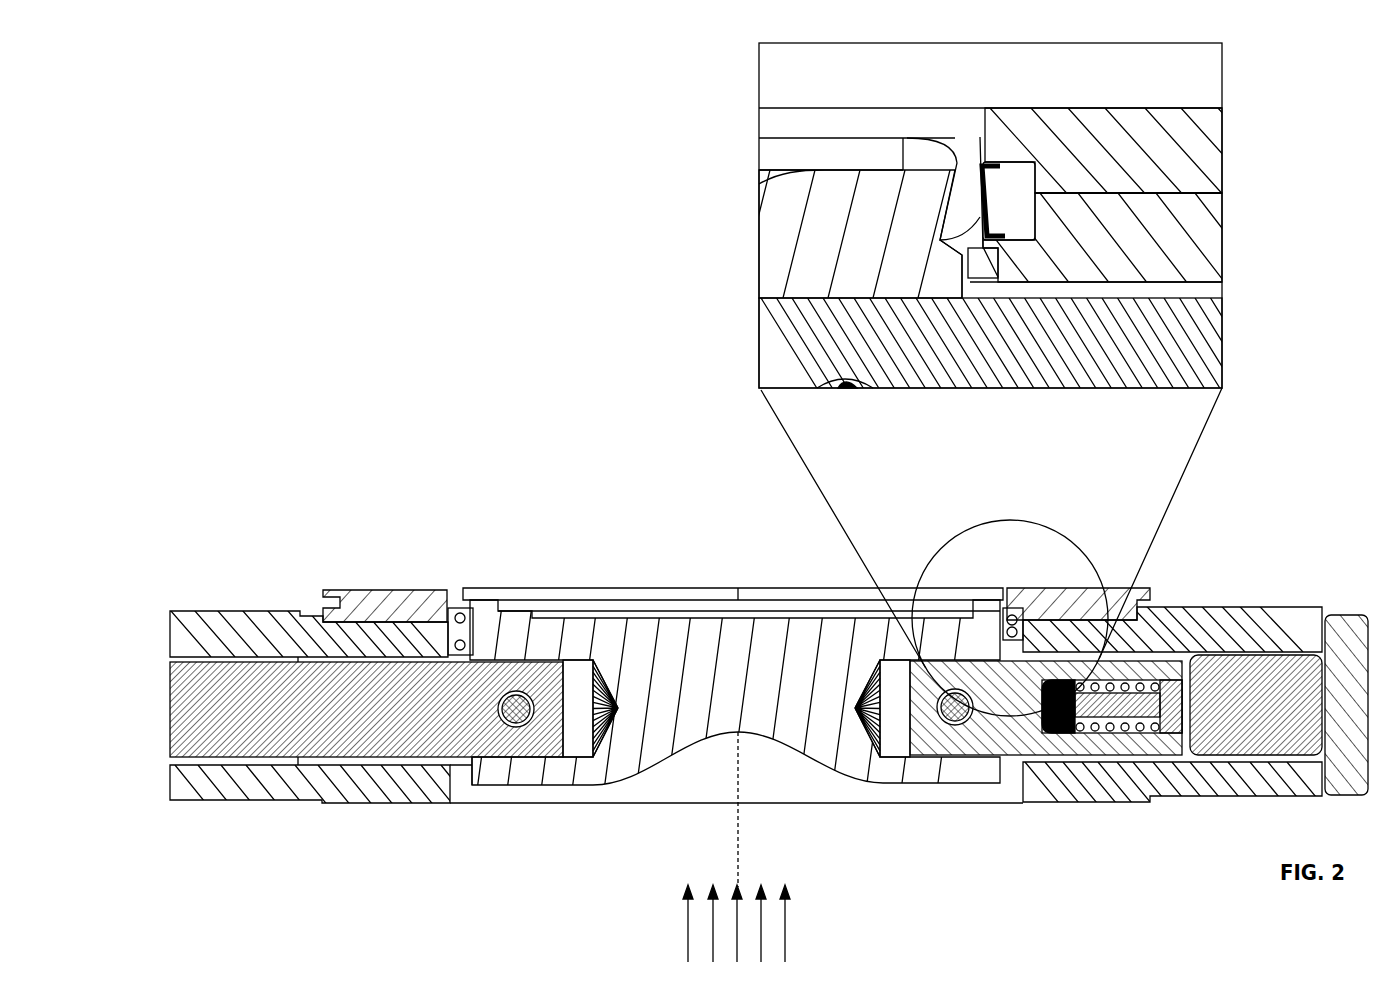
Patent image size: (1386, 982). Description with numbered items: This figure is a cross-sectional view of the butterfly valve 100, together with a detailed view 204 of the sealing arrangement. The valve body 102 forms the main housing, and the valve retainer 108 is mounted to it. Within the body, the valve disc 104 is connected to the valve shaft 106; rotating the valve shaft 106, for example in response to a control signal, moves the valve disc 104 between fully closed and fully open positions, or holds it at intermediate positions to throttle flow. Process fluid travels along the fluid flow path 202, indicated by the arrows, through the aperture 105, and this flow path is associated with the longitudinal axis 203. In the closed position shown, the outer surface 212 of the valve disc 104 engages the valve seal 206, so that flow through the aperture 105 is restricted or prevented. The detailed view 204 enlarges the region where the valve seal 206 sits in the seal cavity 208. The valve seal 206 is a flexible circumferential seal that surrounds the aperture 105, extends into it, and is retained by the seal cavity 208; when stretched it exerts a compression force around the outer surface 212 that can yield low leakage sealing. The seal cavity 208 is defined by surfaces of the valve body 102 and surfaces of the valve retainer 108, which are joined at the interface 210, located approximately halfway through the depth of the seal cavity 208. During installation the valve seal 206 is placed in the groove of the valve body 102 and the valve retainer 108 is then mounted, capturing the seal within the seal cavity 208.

The butterfly valve 100 is at (1236, 460).
The valve body 102 is at (1200, 605).
The valve disc 104 is at (748, 637).
The aperture 105 is at (462, 788).
The valve shaft 106 is at (292, 697).
The valve retainer 108 is at (400, 588).
The fluid flow path 202 is at (688, 946).
The longitudinal axis 203 is at (737, 833).
The detailed view 204 is at (1280, 76).
The valve seal 206 is at (980, 137).
The seal cavity 208 is at (1027, 212).
The interface 210 is at (1068, 188).
The outer surface 212 is at (937, 234).